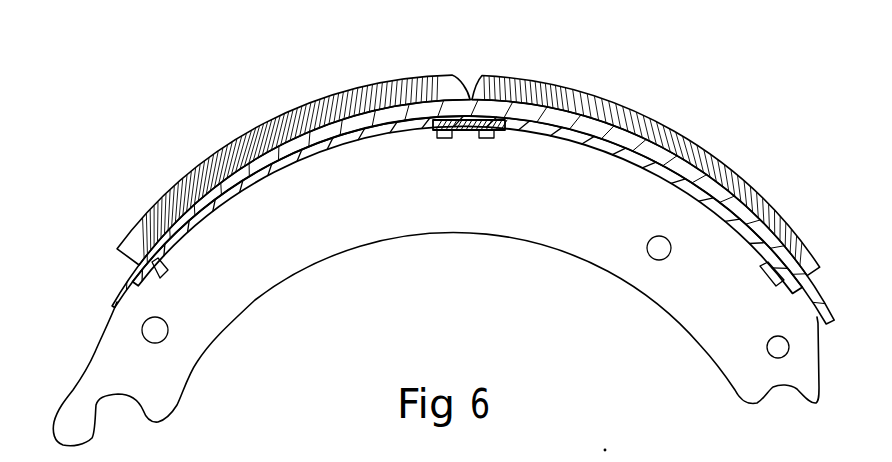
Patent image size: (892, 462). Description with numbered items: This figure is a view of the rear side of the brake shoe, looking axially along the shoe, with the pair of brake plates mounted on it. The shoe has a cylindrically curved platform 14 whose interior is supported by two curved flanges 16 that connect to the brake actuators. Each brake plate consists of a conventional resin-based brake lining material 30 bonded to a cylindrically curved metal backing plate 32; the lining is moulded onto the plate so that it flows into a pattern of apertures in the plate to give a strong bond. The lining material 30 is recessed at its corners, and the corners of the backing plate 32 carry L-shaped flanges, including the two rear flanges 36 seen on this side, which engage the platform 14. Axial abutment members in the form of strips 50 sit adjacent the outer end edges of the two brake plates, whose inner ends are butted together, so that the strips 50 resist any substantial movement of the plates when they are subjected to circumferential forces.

The platform 14 is at (270, 178).
The curved flanges 16 is at (557, 253).
The brake lining material 30 is at (300, 118).
The backing plate 32 is at (205, 212).
The rear flanges 36 is at (483, 141).
The strips 50 is at (818, 270).